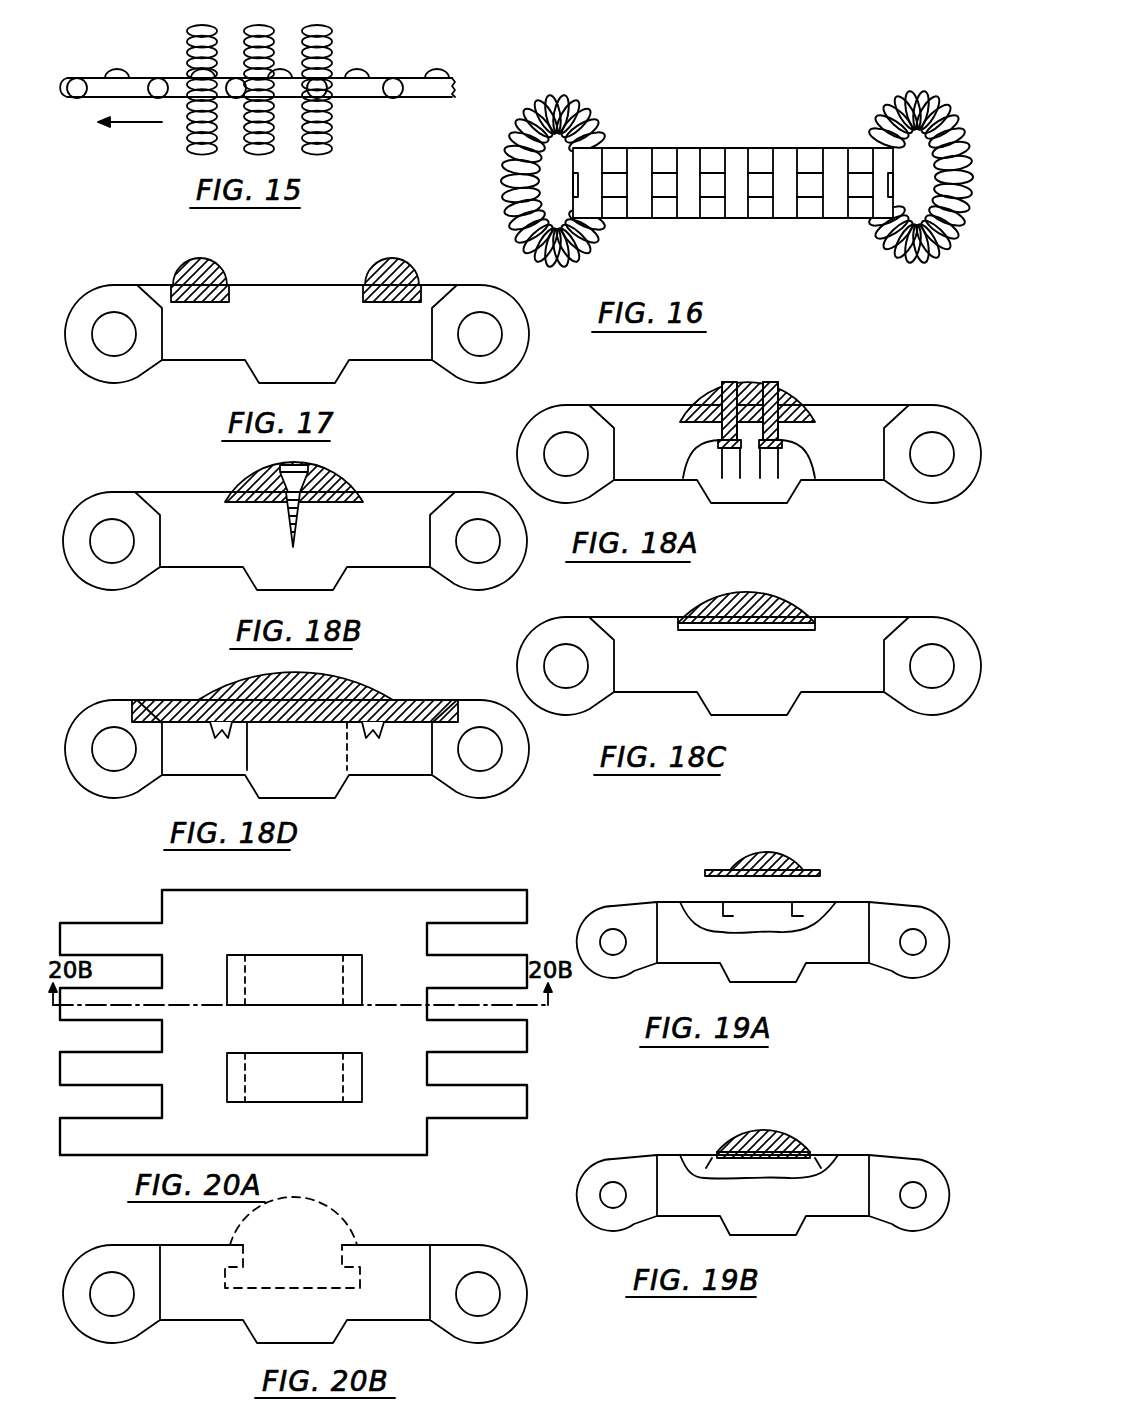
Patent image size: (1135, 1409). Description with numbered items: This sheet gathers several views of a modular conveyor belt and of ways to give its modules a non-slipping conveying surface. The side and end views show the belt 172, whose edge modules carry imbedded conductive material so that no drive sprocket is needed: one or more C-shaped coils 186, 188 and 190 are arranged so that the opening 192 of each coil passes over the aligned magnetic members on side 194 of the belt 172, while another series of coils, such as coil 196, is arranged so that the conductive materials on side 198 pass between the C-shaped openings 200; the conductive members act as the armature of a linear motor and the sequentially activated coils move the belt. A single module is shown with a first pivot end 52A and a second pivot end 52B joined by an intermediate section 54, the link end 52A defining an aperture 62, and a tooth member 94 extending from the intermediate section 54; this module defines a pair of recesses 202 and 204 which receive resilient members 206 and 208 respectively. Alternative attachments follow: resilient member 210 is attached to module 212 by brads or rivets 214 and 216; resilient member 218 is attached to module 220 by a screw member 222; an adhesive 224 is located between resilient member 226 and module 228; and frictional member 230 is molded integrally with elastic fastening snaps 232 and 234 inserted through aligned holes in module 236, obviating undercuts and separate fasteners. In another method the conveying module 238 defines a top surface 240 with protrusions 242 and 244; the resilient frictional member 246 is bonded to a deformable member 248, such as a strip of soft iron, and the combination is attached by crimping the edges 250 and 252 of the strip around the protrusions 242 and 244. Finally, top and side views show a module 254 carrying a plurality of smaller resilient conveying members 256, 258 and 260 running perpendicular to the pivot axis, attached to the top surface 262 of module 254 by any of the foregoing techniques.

In FIG. 15, the belt 172 is at (402, 80).
In FIG. 15, the C-shaped coil 186 is at (185, 56).
In FIG. 15, the C-shaped coil 188 is at (255, 30).
In FIG. 15, the C-shaped coil 190 is at (336, 38).
In FIG. 16, the opening 192 is at (860, 146).
In FIG. 16, the side 194 is at (825, 231).
In FIG. 16, the C-shaped coil 196 is at (503, 178).
In FIG. 16, the side 198 is at (614, 222).
In FIG. 16, the C-shaped opening 200 is at (612, 148).
In FIG. 17, the intermediate section 54 is at (300, 286).
In FIG. 17, the resilient member 206 is at (215, 270).
In FIG. 17, the resilient member 208 is at (398, 268).
In FIG. 17, the recess 202 is at (205, 303).
In FIG. 17, the recess 204 is at (383, 303).
In FIG. 17, the first pivot end 52A is at (458, 378).
In FIG. 17, the second pivot end 52B is at (120, 380).
In FIG. 17, the tooth member 94 is at (325, 384).
In FIG. 17, the aperture 62 is at (500, 352).
In FIG. 18A, the resilient member 210 is at (790, 398).
In FIG. 18A, the module 212 is at (695, 478).
In FIG. 18A, the brad or rivet 214 is at (690, 470).
In FIG. 18A, the brad or rivet 216 is at (800, 470).
In FIG. 18B, the resilient member 218 is at (248, 482).
In FIG. 18B, the module 220 is at (210, 568).
In FIG. 18B, the screw member 222 is at (297, 528).
In FIG. 18C, the adhesive 224 is at (786, 630).
In FIG. 18C, the resilient member 226 is at (808, 600).
In FIG. 18C, the module 228 is at (674, 688).
In FIG. 18D, the frictional member 230 is at (342, 682).
In FIG. 18D, the elastic fastening snap 232 is at (210, 750).
In FIG. 18D, the elastic fastening snap 234 is at (372, 750).
In FIG. 19B, the elastic fastening snap 234 is at (815, 1160).
In FIG. 18D, the module 236 is at (314, 780).
In FIG. 19A, the conveying module 238 is at (832, 960).
In FIG. 19B, the conveying module 238 is at (826, 1222).
In FIG. 19B, the top surface 240 is at (760, 1178).
In FIG. 19A, the protrusion 242 is at (805, 905).
In FIG. 19A, the protrusion 244 is at (722, 906).
In FIG. 19A, the resilient frictional member 246 is at (770, 852).
In FIG. 19B, the resilient frictional member 246 is at (768, 1130).
In FIG. 20B, the resilient frictional member 246 is at (226, 1325).
In FIG. 19A, the deformable member 248 is at (815, 878).
In FIG. 19A, the edge 250 is at (812, 870).
In FIG. 19A, the edge 252 is at (706, 871).
In FIG. 19B, the edge 252 is at (712, 1157).
In FIG. 20A, the module 254 is at (145, 910).
In FIG. 20A, the conveying member 256 is at (294, 958).
In FIG. 20A, the conveying member 258 is at (286, 1056).
In FIG. 20B, the conveying member 260 is at (326, 1222).
In FIG. 20A, the top surface 262 is at (407, 1146).